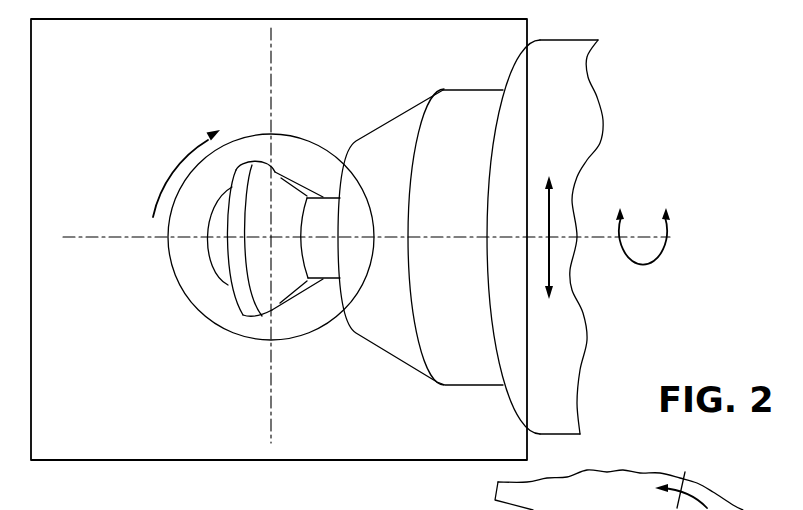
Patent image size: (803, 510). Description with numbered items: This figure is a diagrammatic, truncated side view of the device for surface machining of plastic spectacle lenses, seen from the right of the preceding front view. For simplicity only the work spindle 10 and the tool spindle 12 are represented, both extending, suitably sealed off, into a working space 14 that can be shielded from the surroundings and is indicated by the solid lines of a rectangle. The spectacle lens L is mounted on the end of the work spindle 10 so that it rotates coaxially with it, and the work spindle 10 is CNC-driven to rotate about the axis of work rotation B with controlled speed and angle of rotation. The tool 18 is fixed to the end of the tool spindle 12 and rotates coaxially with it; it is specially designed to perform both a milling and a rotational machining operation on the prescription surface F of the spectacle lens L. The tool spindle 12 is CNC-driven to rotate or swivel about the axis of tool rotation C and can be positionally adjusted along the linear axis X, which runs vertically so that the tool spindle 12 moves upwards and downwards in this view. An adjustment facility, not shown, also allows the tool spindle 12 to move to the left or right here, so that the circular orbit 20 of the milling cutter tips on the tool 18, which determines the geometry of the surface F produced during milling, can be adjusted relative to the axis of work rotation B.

The work spindle 10 is at (290, 157).
The tool spindle 12 is at (470, 370).
The working space 14 is at (155, 461).
The tool 18 is at (298, 305).
The circular orbit 20 is at (250, 315).
The axis of work rotation B is at (173, 167).
The prescription surface F is at (220, 245).
The spectacle lens L is at (208, 281).
The linear axis X is at (551, 213).
The axis of tool rotation C is at (657, 270).